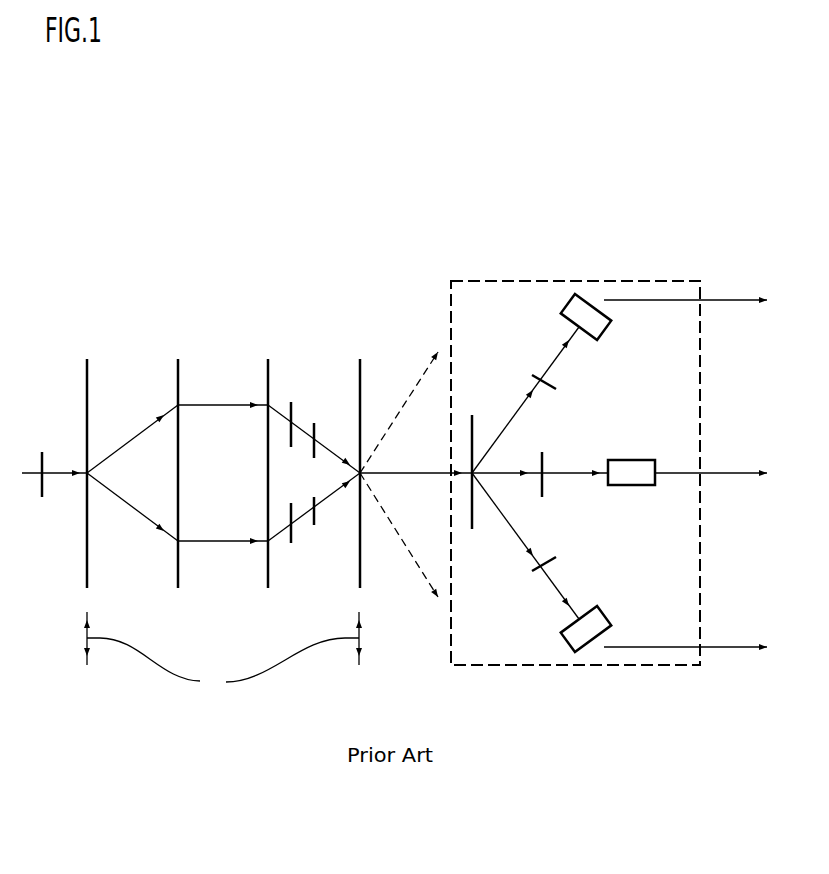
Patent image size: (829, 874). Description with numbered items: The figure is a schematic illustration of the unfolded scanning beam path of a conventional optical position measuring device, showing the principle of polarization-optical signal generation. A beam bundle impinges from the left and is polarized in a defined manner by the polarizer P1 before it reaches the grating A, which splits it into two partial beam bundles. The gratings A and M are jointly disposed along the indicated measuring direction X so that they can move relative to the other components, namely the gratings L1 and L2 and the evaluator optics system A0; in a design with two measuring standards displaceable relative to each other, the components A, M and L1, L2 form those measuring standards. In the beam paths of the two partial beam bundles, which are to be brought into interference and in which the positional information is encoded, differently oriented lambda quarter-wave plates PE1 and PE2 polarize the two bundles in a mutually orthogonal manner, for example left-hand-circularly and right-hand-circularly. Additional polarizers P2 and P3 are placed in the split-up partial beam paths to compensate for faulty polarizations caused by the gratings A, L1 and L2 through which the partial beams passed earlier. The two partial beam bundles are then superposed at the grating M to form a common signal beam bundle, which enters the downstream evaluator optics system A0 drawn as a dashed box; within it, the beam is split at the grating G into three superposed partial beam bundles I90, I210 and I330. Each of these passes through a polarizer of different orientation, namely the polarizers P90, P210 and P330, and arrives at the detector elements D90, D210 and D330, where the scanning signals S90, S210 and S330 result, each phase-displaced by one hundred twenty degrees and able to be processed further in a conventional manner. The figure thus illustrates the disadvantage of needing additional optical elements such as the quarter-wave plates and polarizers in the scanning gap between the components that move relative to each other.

The grating A is at (87, 373).
The polarizer P1 is at (42, 463).
The grating L1 is at (178, 373).
The grating L2 is at (280, 346).
The grating M is at (368, 344).
The polarizer P2 is at (294, 411).
The polarizer P3 is at (294, 536).
The lambda quarter-wave plate PE1 is at (314, 428).
The lambda quarter-wave plate PE2 is at (314, 520).
The evaluator optics system A0 is at (518, 281).
The grating G is at (470, 485).
The superposed partial beam bundle I210 is at (502, 431).
The polarizer P210 is at (534, 365).
The detector element D210 is at (582, 308).
The scanning signal S210 is at (685, 290).
The superposed partial beam bundle I90 is at (507, 473).
The polarizer P90 is at (542, 485).
The detector element D90 is at (640, 485).
The scanning signal S90 is at (711, 463).
The superposed partial beam bundle I330 is at (511, 525).
The polarizer P330 is at (534, 579).
The detector element D330 is at (590, 620).
The scanning signal S330 is at (685, 636).
The measuring direction X is at (223, 652).